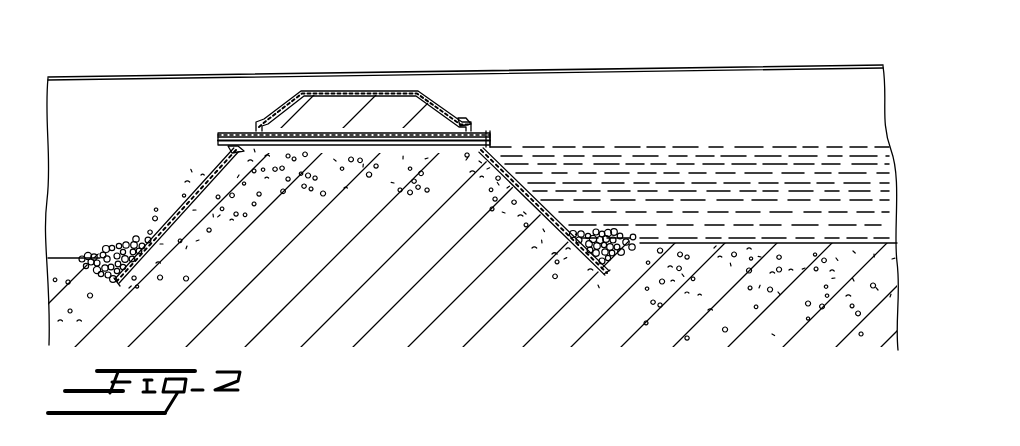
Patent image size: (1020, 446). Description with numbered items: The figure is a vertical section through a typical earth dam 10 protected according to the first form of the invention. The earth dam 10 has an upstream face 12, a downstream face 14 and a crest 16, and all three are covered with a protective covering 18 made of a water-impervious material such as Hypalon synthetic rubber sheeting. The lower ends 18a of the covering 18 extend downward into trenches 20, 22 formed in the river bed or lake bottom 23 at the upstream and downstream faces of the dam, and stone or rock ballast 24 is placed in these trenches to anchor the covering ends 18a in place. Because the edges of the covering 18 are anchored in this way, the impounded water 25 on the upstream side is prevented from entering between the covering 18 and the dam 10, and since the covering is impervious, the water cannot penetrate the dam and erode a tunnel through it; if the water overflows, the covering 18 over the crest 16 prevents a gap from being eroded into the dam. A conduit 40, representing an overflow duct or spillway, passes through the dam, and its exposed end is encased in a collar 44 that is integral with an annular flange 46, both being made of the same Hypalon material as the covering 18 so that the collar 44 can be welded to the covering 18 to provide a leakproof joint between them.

The earth dam 10 is at (492, 186).
The upstream face 12 is at (531, 212).
The downstream face 14 is at (199, 195).
The crest 16 is at (378, 91).
The protective covering 18 is at (344, 90).
The lower ends of the covering 18a is at (122, 286).
The trench 20 is at (582, 272).
The trench 22 is at (106, 271).
The river bed or lake bottom 23 is at (59, 257).
The stone or rock ballast 24 is at (618, 240).
The impounded water 25 is at (793, 155).
The conduit 40 is at (308, 131).
The collar 44 is at (487, 125).
The annular flange 46 is at (461, 119).